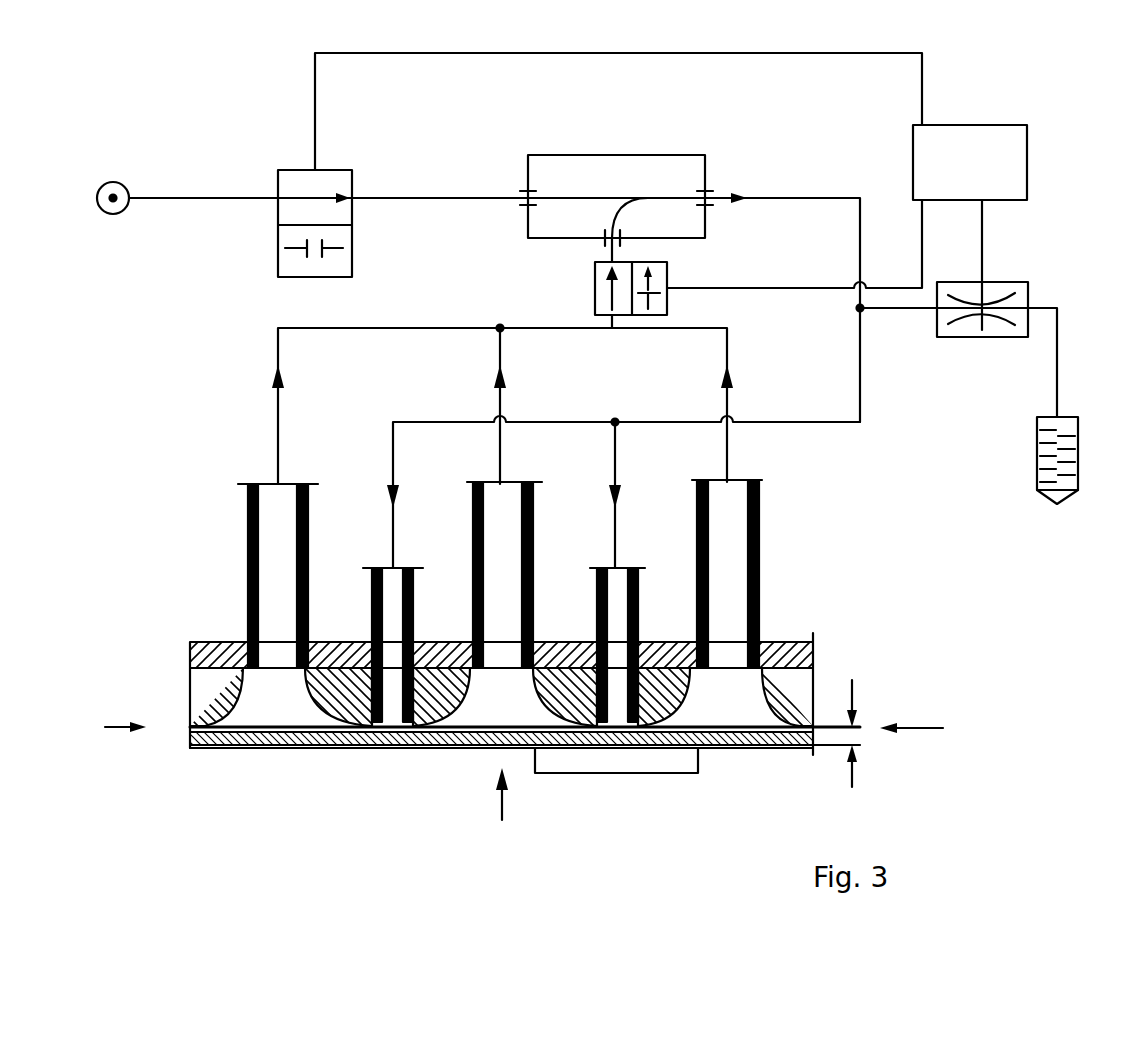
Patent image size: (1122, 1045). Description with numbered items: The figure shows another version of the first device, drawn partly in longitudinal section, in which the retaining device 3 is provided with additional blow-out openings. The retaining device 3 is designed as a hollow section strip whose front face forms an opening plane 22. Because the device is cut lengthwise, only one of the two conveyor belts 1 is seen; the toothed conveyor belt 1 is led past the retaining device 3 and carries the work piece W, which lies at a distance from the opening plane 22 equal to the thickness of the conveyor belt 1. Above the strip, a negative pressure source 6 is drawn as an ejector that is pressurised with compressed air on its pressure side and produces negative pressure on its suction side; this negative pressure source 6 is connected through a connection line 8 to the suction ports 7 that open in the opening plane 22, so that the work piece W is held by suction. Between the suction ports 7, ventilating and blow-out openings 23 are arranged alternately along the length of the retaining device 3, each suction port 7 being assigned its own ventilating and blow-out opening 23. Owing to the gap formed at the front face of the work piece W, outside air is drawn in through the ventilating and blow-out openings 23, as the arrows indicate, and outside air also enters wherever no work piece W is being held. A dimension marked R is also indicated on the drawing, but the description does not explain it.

The conveyor belt 1 is at (447, 747).
The retaining device 3 is at (808, 562).
The negative pressure source 6 is at (693, 145).
The suction port 7 is at (277, 693).
The connection line 8 is at (275, 410).
The opening plane 22 is at (665, 690).
The ventilating and blow-out opening 23 is at (397, 703).
The work piece W is at (642, 757).
The gap dimension R is at (856, 714).